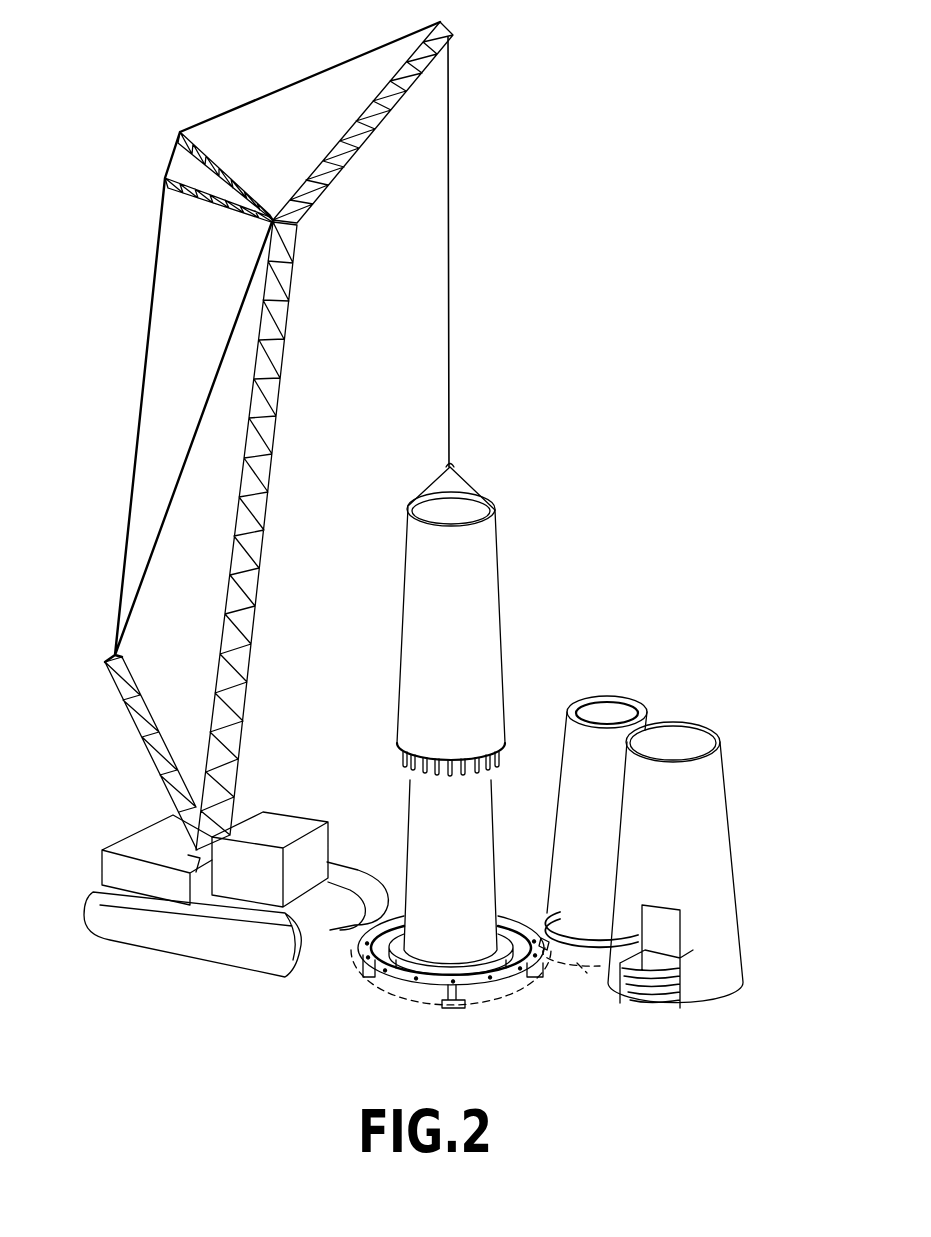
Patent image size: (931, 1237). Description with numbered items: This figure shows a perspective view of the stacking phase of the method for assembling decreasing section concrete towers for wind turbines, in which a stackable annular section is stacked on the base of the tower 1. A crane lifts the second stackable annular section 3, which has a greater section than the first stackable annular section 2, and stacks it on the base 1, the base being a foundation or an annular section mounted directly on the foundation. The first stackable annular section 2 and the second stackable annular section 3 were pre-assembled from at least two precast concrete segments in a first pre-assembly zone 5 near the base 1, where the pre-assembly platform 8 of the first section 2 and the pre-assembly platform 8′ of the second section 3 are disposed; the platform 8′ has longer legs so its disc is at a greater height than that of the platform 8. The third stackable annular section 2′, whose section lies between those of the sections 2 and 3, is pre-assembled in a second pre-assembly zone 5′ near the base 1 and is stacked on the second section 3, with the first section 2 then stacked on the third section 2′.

The base of the tower 1 is at (746, 831).
The first stackable annular section 2 is at (399, 794).
The third stackable annular section 2′ is at (560, 778).
The second stackable annular section 3 is at (512, 571).
The first pre-assembly zone 5 is at (393, 1000).
The second pre-assembly zone 5′ is at (580, 966).
The pre-assembly platform 8 is at (468, 976).
The pre-assembly platform 8′ is at (503, 986).